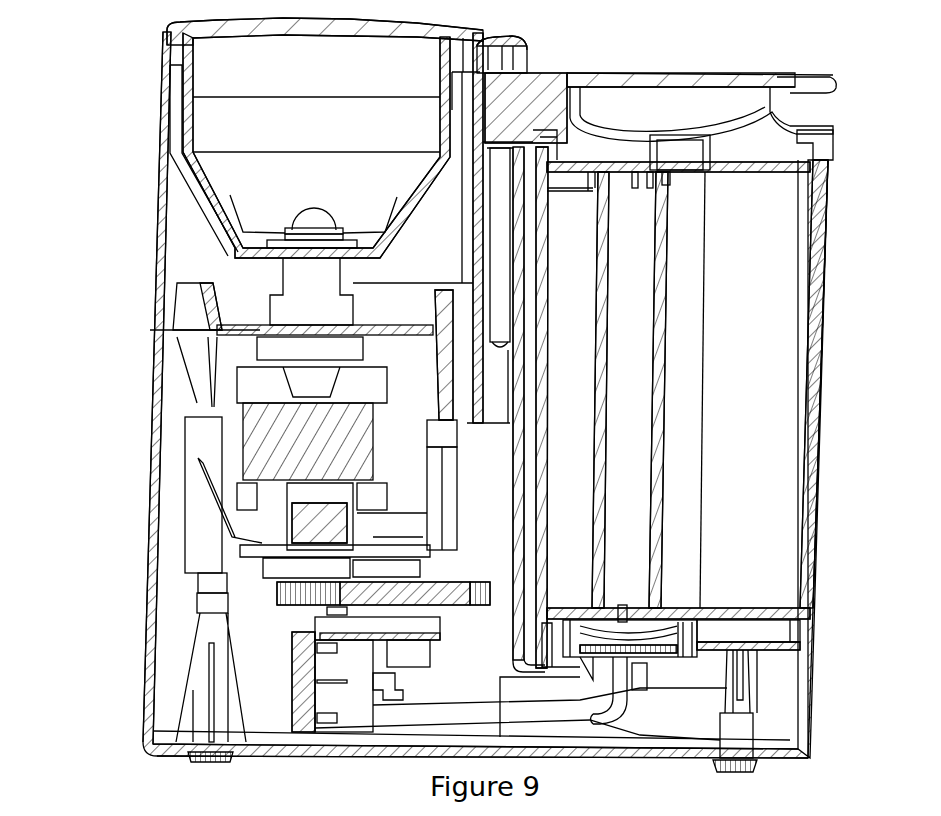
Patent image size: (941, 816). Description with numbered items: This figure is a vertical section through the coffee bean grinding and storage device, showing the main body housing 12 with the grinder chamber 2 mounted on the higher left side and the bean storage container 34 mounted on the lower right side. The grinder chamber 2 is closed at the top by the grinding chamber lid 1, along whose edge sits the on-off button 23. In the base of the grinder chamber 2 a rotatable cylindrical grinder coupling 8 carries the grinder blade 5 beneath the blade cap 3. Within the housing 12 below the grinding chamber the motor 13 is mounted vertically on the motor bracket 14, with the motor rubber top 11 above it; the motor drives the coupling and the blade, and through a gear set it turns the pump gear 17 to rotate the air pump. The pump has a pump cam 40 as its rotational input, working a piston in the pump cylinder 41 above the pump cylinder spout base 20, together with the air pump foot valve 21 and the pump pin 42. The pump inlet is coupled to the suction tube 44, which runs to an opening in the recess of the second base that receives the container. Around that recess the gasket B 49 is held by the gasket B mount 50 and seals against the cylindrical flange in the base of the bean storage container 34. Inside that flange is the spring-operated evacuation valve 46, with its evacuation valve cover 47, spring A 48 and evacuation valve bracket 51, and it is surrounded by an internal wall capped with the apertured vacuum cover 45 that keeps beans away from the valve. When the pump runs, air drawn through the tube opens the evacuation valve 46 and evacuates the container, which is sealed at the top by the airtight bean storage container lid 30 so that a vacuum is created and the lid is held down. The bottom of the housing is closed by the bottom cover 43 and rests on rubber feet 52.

The grinding chamber lid 1 is at (163, 32).
The grinder chamber 2 is at (166, 91).
The blade cap 3 is at (295, 208).
The grinder blade 5 is at (233, 208).
The grinder coupling 8 is at (283, 270).
The motor rubber top 11 is at (278, 342).
The main body housing 12 is at (152, 380).
The motor 13 is at (262, 437).
The motor bracket 14 is at (183, 513).
The pump gear 17 is at (273, 585).
The pump cam 40 is at (383, 648).
The pump cylinder 41 is at (313, 673).
The pump cylinder spout base 20 is at (347, 675).
The suction tube 44 is at (287, 693).
The bottom cover 43 is at (187, 712).
The air pump foot valve 21 is at (327, 700).
The pump pin 42 is at (390, 705).
The on-off button 23 is at (532, 45).
The bean storage container lid 30 is at (789, 113).
The vacuum cover 45 is at (679, 163).
The bean storage container 34 is at (822, 333).
The evacuation valve 46 is at (632, 604).
The evacuation valve cover 47 is at (670, 623).
The spring A 48 is at (699, 634).
The gasket B 49 is at (684, 653).
The gasket B mount 50 is at (692, 667).
The evacuation valve bracket 51 is at (665, 665).
The rubber foot 52 is at (760, 770).